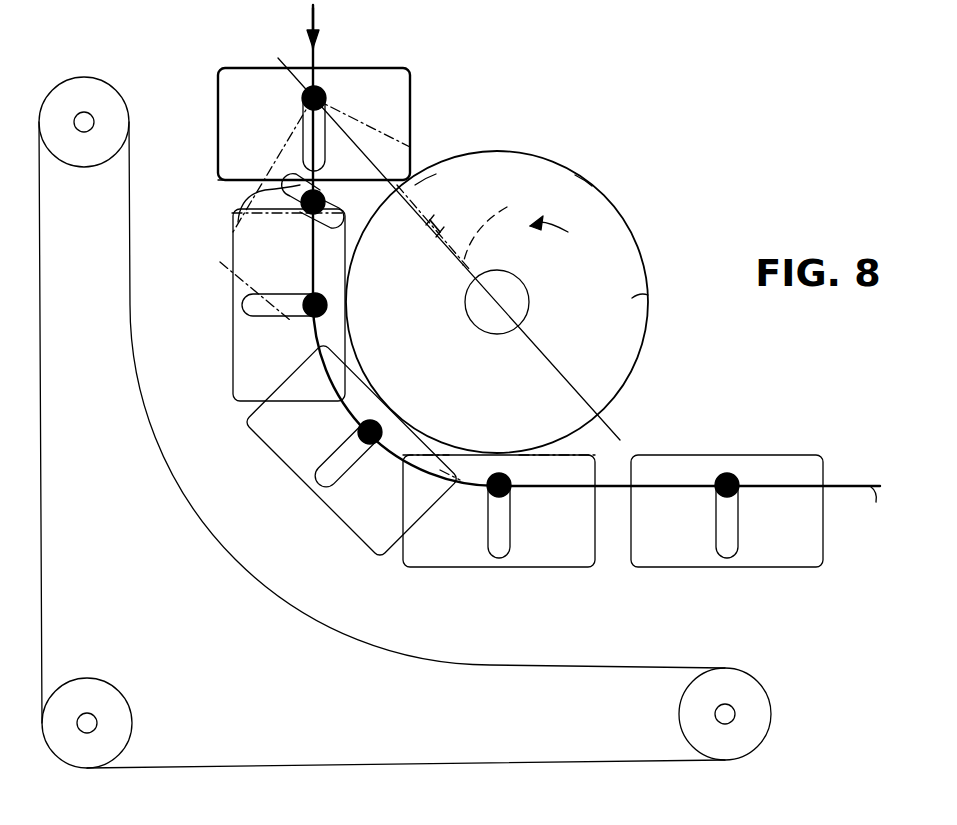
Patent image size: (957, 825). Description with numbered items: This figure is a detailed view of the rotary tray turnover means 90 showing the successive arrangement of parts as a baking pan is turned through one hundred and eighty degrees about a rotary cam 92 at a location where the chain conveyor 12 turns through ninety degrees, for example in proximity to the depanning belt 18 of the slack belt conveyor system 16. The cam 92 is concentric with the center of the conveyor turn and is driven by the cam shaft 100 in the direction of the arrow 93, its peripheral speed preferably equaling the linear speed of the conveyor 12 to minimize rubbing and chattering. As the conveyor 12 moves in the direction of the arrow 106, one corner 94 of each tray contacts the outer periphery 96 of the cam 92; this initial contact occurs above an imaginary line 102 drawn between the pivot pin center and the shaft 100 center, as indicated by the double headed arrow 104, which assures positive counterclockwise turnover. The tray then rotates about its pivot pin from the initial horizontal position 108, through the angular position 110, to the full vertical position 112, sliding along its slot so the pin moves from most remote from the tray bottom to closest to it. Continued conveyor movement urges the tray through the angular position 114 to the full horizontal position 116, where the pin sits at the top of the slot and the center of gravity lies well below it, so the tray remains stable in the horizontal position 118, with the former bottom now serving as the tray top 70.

The chain conveyor 12 is at (318, 62).
The slack belt conveyor system 16 is at (313, 772).
The depanning belt 18 is at (600, 666).
The tray top 70 is at (800, 456).
The rotary tray turnover means 90 is at (520, 290).
The rotary cam 92 is at (636, 296).
The arrow 93 is at (568, 232).
The tray corner 94 is at (428, 178).
The outer periphery 96 is at (592, 186).
The cam shaft 100 is at (513, 310).
The imaginary line 102 is at (506, 213).
The double headed arrow 104 is at (440, 232).
The arrow 106 is at (316, 36).
The initial horizontal position 108 is at (334, 136).
The angular position 110 is at (398, 144).
The full vertical position 112 is at (271, 313).
The angular position 114 is at (333, 450).
The full horizontal position 116 is at (499, 515).
The horizontal position 118 is at (731, 509).